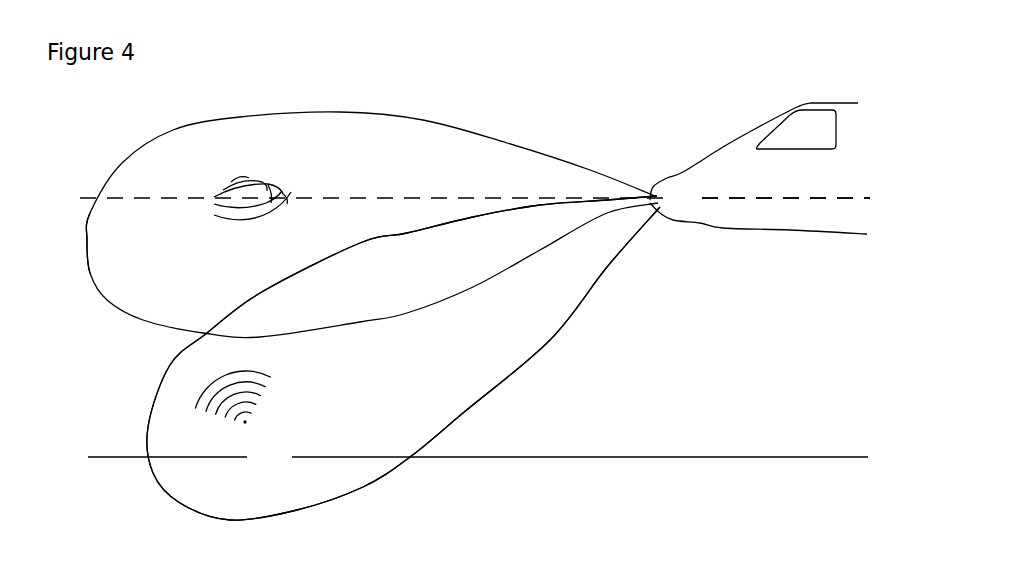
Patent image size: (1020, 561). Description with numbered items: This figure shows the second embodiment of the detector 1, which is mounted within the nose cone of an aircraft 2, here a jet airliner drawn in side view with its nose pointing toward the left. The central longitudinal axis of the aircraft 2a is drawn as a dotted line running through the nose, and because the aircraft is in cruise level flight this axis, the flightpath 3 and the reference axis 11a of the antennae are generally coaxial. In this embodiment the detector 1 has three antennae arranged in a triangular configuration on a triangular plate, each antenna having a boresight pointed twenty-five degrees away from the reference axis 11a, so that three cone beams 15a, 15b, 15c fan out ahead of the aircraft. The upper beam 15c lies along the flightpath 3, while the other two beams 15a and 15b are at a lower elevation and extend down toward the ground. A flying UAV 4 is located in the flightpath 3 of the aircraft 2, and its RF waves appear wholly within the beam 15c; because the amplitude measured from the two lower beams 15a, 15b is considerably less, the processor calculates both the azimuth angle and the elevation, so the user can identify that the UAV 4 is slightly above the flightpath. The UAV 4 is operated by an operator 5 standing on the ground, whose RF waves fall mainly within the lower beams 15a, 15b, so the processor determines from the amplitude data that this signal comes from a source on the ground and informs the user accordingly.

The detector 1 is at (680, 210).
The aircraft 2 is at (828, 177).
The central longitudinal axis of the aircraft 2a is at (862, 199).
The flightpath 3 is at (532, 197).
The UAV 4 is at (208, 166).
The operator 5 is at (260, 454).
The reference axis 11a is at (133, 197).
The cone beam of first antenna 15a is at (441, 361).
The cone beam of second antenna 15b is at (485, 361).
The cone beam of third antenna 15c is at (386, 162).